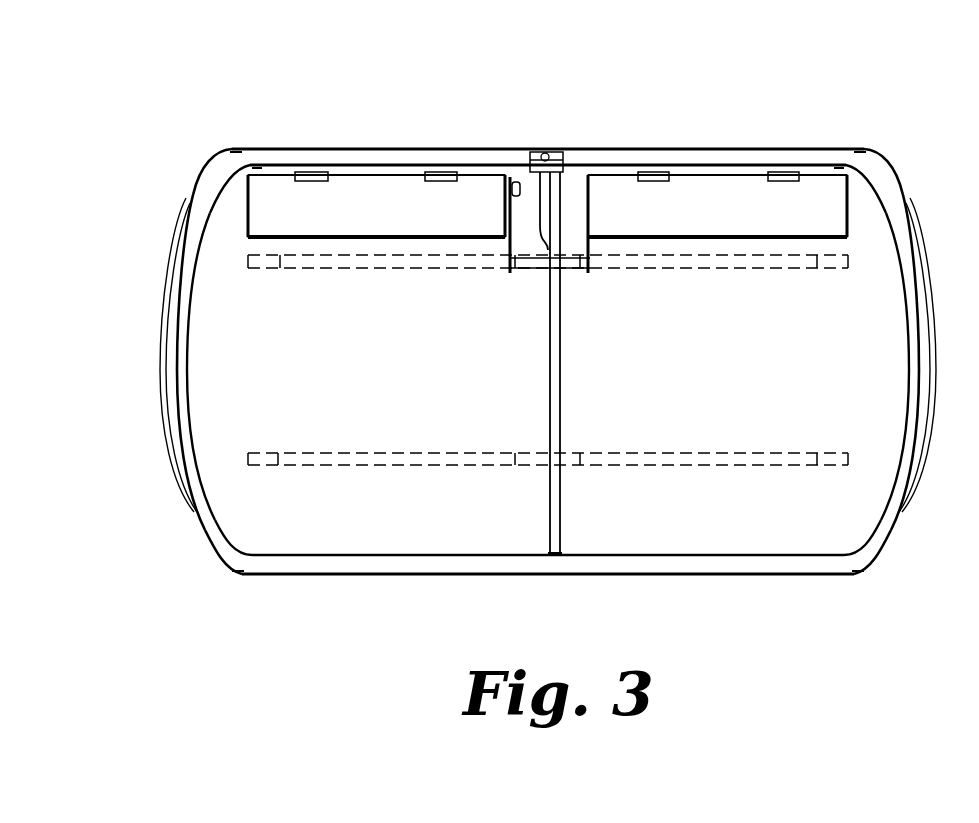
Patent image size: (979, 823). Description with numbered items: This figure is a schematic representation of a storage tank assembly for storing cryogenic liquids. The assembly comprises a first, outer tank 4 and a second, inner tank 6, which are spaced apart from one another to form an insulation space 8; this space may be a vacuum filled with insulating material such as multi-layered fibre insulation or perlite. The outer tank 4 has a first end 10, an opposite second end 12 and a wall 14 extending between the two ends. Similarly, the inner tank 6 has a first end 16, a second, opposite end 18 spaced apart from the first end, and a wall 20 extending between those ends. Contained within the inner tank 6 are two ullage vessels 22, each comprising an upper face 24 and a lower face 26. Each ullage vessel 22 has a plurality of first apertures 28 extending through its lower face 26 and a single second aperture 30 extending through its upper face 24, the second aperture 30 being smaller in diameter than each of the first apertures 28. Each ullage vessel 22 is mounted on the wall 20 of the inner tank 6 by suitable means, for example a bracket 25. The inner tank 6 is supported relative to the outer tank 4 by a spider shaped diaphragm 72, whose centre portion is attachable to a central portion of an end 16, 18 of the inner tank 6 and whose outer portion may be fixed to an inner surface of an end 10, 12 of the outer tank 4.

The outer tank 4 is at (202, 177).
The inner tank 6 is at (206, 237).
The insulation space 8 is at (210, 528).
The first end 10 is at (187, 213).
The second end 12 is at (907, 207).
The wall 14 is at (303, 573).
The first end 16 is at (189, 300).
The second end 18 is at (897, 247).
The wall 20 is at (357, 557).
The ullage vessel 22 is at (248, 240).
The upper face 24 is at (367, 175).
The bracket 25 is at (312, 181).
The lower face 26 is at (302, 235).
The first apertures 28 is at (325, 240).
The second aperture 30 is at (385, 177).
The diaphragm 72 is at (180, 280).